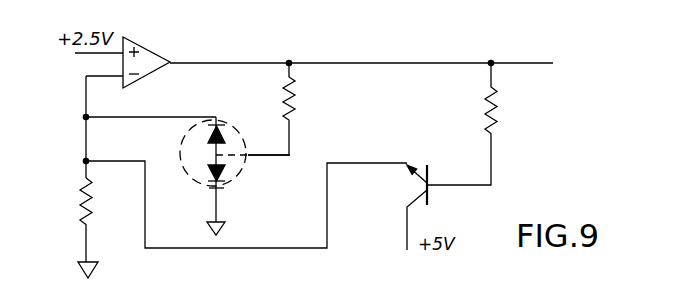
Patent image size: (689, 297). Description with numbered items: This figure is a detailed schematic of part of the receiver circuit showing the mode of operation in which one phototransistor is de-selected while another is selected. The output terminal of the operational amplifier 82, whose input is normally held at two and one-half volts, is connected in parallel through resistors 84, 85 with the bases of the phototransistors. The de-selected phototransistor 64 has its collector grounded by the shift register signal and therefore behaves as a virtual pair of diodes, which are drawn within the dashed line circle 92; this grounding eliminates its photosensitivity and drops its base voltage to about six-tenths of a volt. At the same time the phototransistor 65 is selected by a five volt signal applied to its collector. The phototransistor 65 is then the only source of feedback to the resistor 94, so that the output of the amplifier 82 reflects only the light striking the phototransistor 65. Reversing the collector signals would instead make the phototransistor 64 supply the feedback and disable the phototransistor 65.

The operational amplifier 82 is at (150, 42).
The resistor 84 is at (298, 102).
The resistor 85 is at (500, 110).
The resistor 94 is at (85, 200).
The broken line circle 92 is at (200, 187).
The phototransistor 64 is at (240, 181).
The phototransistor 65 is at (418, 161).